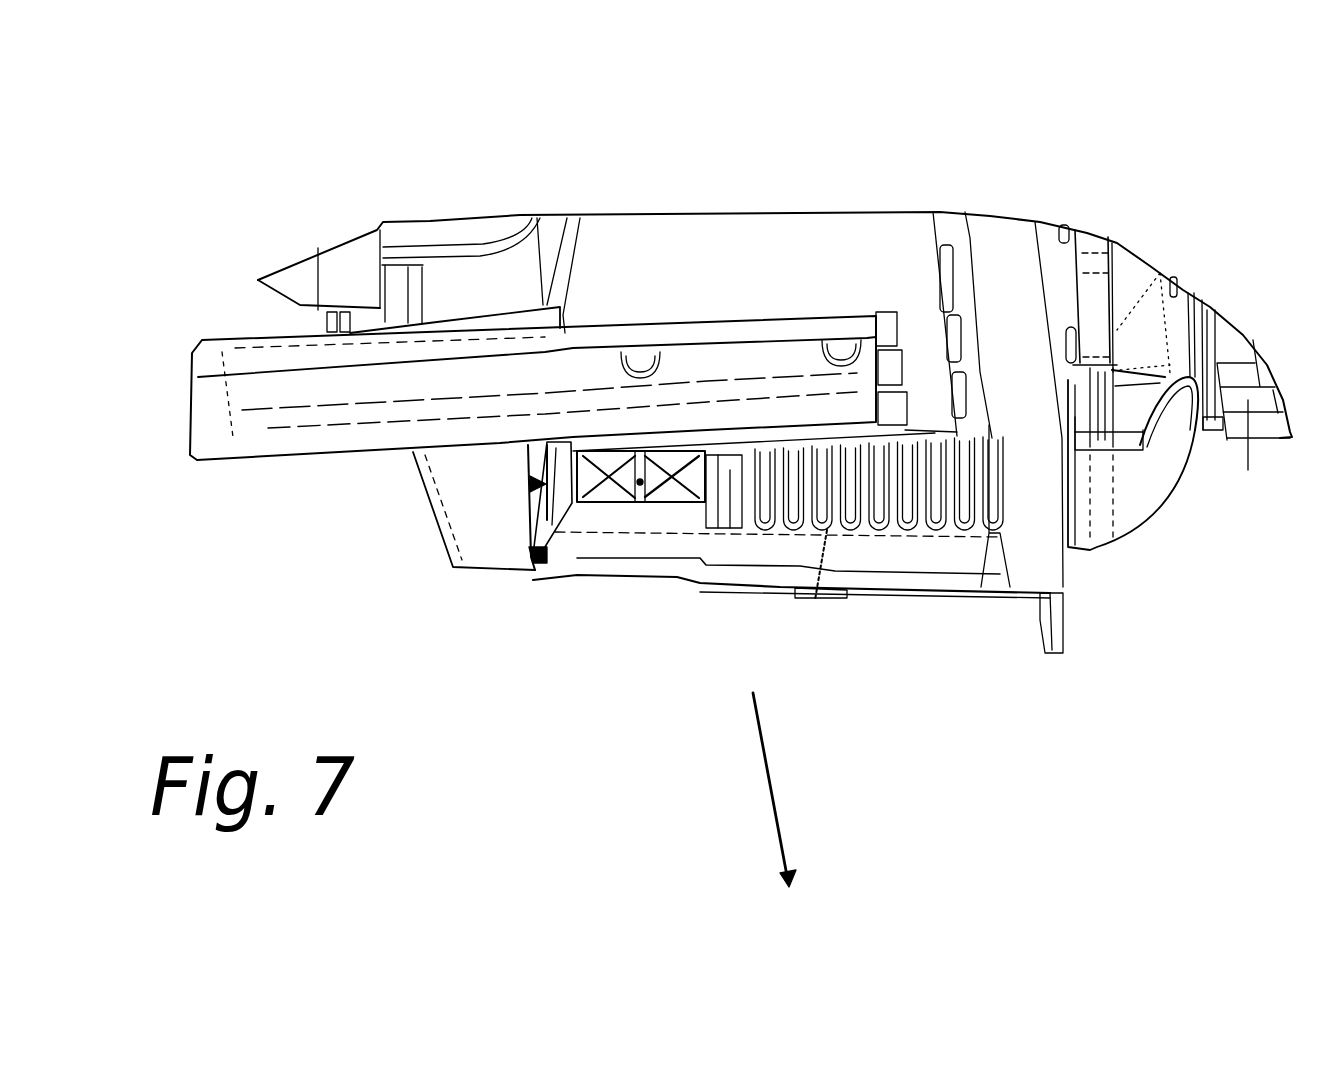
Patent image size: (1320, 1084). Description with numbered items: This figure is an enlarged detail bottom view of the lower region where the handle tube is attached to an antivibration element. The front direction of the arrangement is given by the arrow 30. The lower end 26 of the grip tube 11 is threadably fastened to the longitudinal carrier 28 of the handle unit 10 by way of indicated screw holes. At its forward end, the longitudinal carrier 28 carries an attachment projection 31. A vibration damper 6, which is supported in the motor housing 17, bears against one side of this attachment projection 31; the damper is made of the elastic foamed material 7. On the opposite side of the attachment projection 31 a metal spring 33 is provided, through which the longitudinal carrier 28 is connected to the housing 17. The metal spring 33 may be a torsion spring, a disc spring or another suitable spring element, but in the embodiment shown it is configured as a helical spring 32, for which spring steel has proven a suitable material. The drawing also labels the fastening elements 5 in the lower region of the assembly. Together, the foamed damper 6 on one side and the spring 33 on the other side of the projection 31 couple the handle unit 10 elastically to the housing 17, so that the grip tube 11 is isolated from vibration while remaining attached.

The fastening elements 5 is at (772, 556).
The vibration damper 6 is at (533, 484).
The elastic foamed material 7 is at (550, 505).
The handle unit 10 is at (791, 228).
The grip tube 11 is at (265, 430).
The motor housing 17 is at (447, 493).
The lower end 26 is at (670, 338).
The longitudinal carrier 28 is at (712, 288).
The arrow 30 is at (769, 766).
The attachment projection 31 is at (643, 487).
The helical spring 32 is at (897, 523).
The metal spring 33 is at (943, 555).